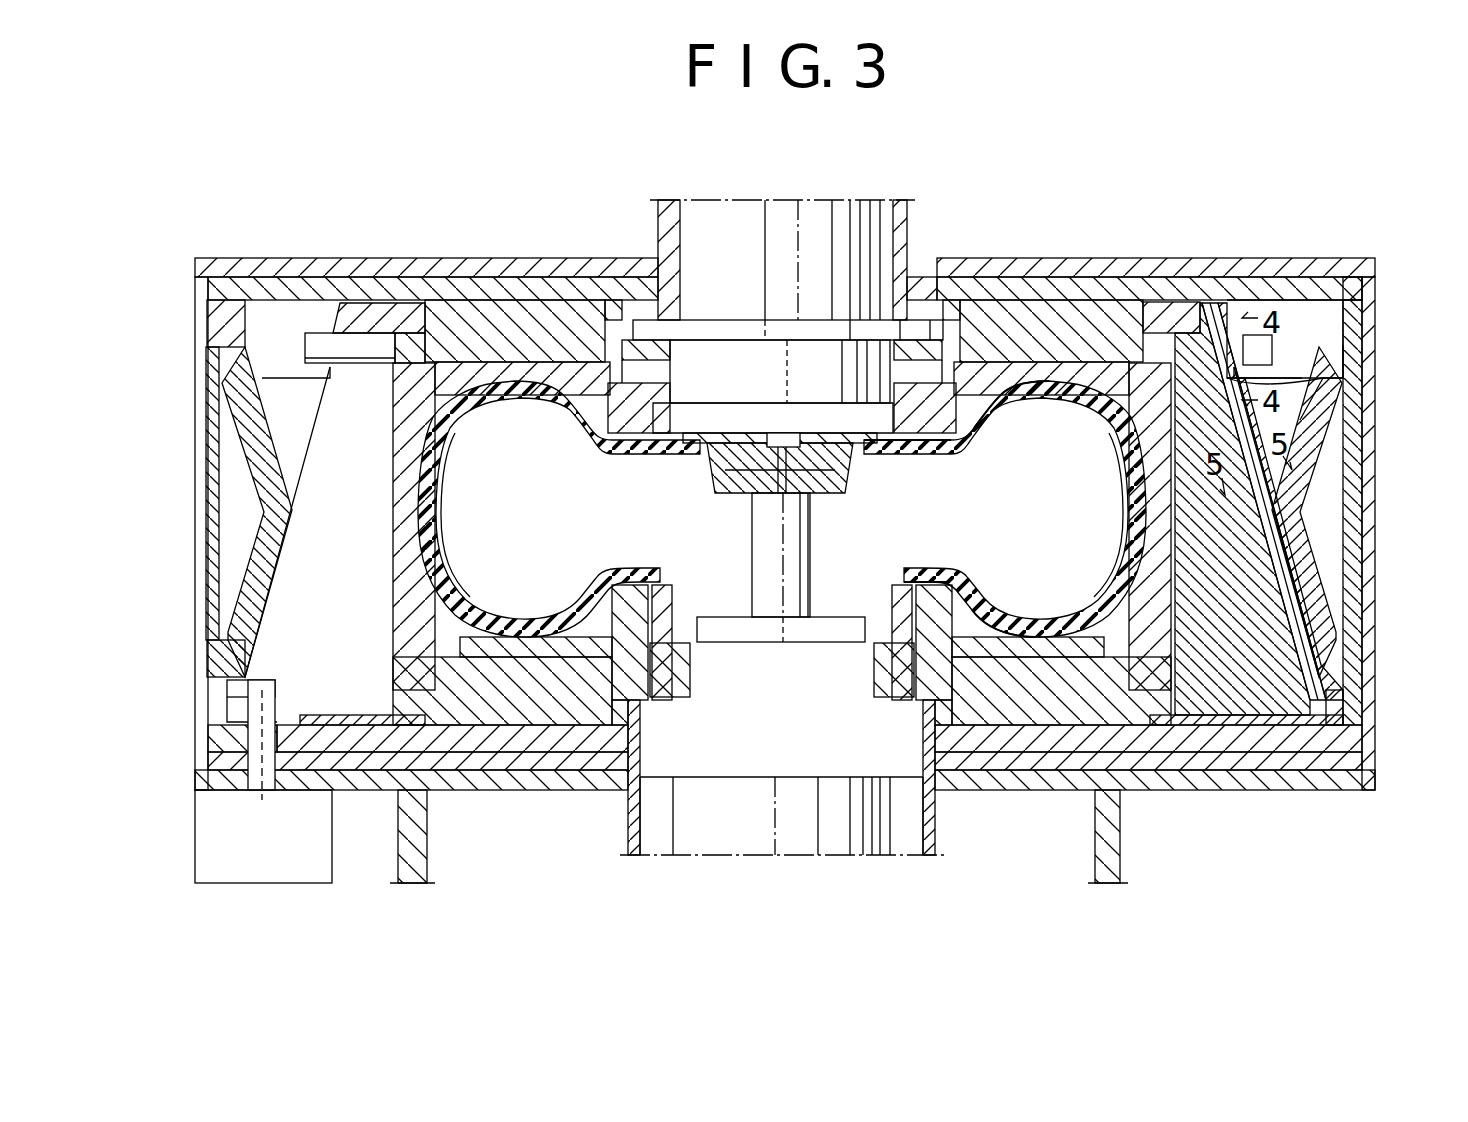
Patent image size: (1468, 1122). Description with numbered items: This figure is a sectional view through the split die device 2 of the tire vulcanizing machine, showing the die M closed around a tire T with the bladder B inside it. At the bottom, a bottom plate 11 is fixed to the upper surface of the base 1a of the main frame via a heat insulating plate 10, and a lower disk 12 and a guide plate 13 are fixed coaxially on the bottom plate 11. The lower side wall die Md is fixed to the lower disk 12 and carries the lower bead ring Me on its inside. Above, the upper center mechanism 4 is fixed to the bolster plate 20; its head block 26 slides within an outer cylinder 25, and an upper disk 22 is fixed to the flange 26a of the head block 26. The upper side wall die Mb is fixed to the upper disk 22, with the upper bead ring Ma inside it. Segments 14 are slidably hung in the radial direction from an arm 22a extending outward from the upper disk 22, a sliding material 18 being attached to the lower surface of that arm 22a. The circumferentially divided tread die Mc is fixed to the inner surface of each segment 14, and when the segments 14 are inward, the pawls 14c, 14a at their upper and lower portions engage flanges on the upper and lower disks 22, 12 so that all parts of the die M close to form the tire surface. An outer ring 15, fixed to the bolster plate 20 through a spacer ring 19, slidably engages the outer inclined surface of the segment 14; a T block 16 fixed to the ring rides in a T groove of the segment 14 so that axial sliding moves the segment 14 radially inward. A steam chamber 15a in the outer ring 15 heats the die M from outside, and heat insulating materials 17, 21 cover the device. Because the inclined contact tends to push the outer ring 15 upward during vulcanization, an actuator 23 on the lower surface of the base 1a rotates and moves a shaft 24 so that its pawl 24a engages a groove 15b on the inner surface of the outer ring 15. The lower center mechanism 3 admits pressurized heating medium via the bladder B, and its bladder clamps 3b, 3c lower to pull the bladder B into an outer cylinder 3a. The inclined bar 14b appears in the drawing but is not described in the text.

The split die device 2 is at (822, 543).
The lower center mechanism 3 is at (783, 872).
The outer cylinder 3a is at (937, 838).
The bladder clamp 3b is at (672, 605).
The bladder clamp 3c is at (702, 476).
The upper center mechanism 4 is at (810, 188).
The heat insulating plate 10 is at (1262, 760).
The bottom plate 11 is at (1302, 745).
The lower disk 12 is at (1115, 715).
The guide plate 13 is at (1340, 760).
The segment 14 is at (1235, 710).
The pawl 14a is at (1168, 710).
The inclined bar 14b is at (1322, 702).
The pawl 14c is at (1163, 316).
The outer ring 15 is at (1318, 600).
The steam chamber 15a is at (1330, 548).
The groove 15b is at (222, 680).
The T block 16 is at (1350, 664).
The heat insulating material 17 is at (1368, 447).
The sliding material 18 is at (1333, 372).
The spacer ring 19 is at (1350, 320).
The bolster plate 20 is at (1342, 288).
The heat insulating material 21 is at (1302, 272).
The upper disk 22 is at (1040, 316).
The arm 22a is at (1255, 345).
The actuator 23 is at (250, 860).
The shaft 24 is at (262, 742).
The pawl 24a is at (235, 698).
The outer cylinder 25 is at (915, 245).
The head block 26 is at (845, 222).
The flange 26a is at (712, 330).
The base 1a is at (1080, 795).
The bladder B is at (458, 485).
The tire T is at (445, 585).
The die M is at (782, 509).
The upper bead ring Ma is at (932, 432).
The upper side wall die Mb is at (1049, 398).
The tread die Mc is at (1142, 492).
The lower side wall die Md is at (1052, 628).
The lower bead ring Me is at (945, 590).